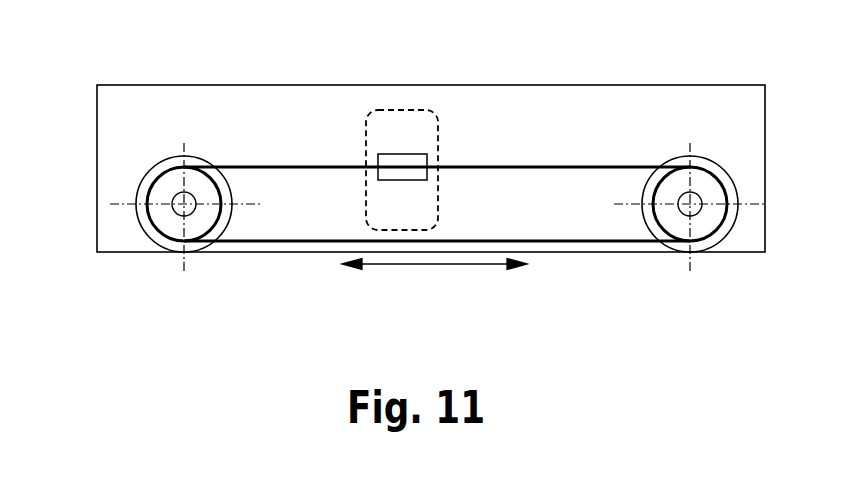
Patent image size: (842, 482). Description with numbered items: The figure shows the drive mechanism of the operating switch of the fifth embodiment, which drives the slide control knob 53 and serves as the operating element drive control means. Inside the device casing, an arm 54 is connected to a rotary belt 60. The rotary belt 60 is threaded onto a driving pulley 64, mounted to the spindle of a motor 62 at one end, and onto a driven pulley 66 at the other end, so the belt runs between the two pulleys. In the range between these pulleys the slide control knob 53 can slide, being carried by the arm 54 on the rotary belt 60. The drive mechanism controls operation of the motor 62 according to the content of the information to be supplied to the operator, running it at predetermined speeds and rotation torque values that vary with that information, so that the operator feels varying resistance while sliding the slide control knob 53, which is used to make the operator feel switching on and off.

The slide control knob 53 is at (418, 110).
The arm 54 is at (413, 164).
The rotary belt 60 is at (295, 241).
The motor 62 is at (138, 180).
The driving pulley 64 is at (210, 228).
The driven pulley 66 is at (662, 234).